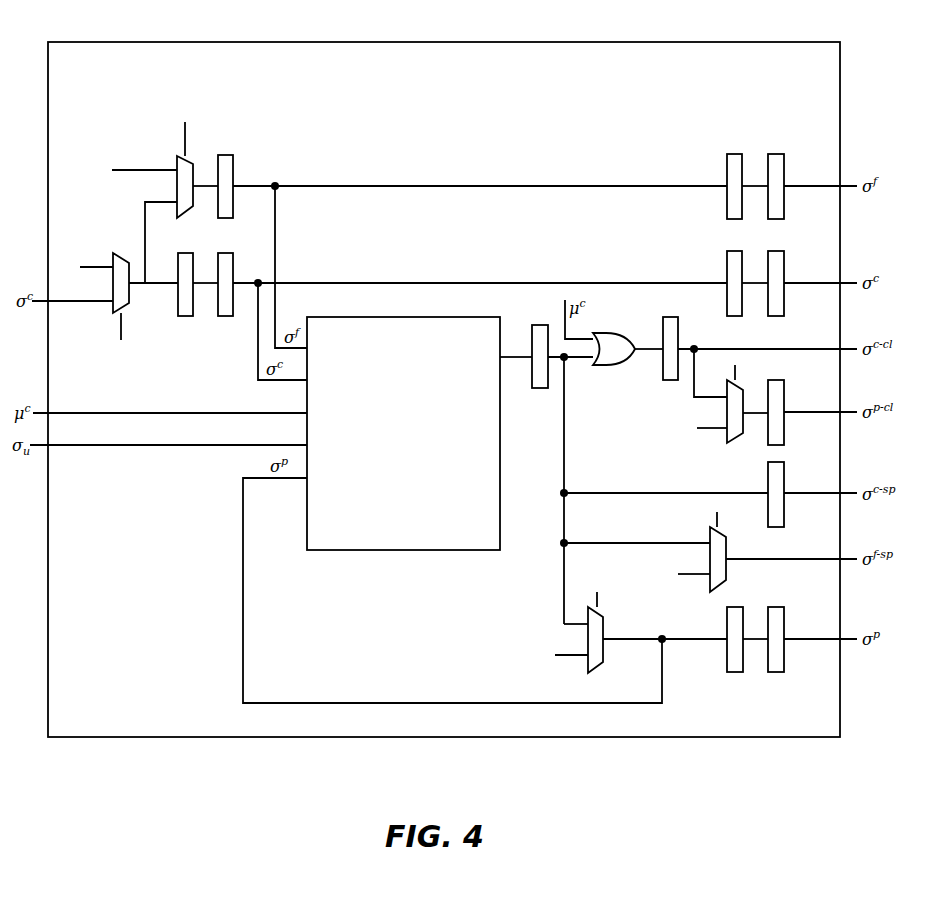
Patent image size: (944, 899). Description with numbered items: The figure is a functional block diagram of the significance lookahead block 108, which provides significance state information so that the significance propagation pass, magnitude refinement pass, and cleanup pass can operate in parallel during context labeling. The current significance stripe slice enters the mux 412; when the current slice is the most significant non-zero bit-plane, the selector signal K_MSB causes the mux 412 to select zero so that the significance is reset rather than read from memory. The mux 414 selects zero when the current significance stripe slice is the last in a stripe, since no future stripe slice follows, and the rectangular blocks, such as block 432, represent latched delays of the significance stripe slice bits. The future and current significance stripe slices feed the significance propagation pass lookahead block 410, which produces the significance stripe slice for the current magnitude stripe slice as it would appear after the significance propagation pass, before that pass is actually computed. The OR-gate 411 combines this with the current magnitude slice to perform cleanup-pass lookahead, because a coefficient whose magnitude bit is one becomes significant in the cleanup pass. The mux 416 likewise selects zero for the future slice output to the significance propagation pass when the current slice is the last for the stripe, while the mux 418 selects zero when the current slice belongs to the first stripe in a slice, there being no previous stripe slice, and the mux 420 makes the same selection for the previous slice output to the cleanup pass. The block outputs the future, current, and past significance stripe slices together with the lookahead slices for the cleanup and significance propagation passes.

The significance lookahead block 108 is at (498, 42).
The significance propagation pass lookahead block 410 is at (428, 317).
The OR-gate 411 is at (596, 331).
The mux 412 is at (113, 254).
The mux 414 is at (177, 158).
The mux 416 is at (710, 590).
The mux 418 is at (588, 672).
The mux 420 is at (727, 442).
The block 432 is at (222, 155).